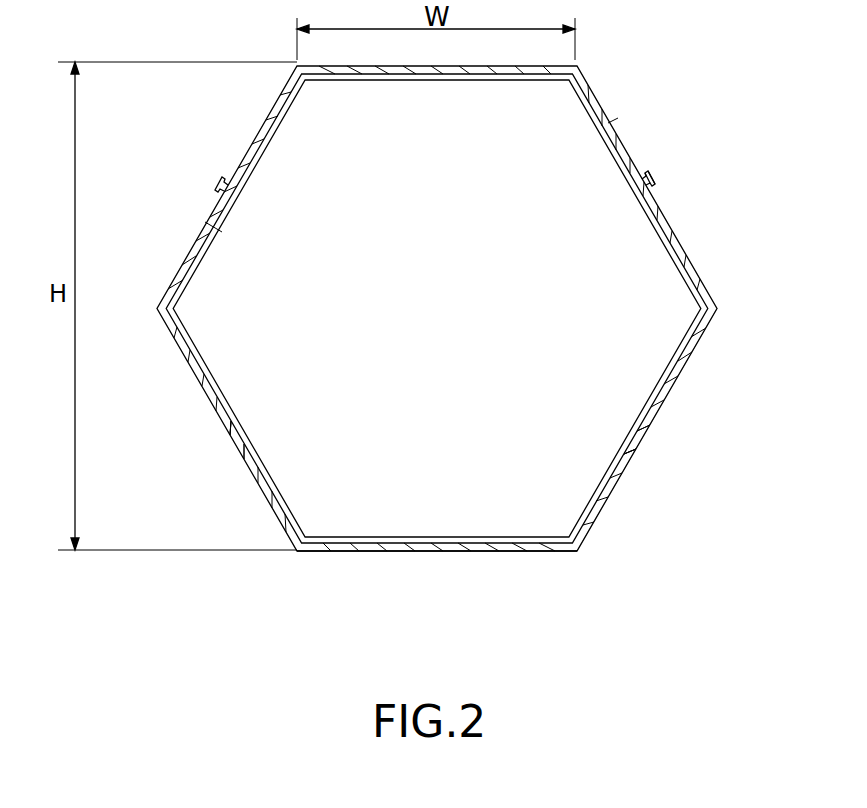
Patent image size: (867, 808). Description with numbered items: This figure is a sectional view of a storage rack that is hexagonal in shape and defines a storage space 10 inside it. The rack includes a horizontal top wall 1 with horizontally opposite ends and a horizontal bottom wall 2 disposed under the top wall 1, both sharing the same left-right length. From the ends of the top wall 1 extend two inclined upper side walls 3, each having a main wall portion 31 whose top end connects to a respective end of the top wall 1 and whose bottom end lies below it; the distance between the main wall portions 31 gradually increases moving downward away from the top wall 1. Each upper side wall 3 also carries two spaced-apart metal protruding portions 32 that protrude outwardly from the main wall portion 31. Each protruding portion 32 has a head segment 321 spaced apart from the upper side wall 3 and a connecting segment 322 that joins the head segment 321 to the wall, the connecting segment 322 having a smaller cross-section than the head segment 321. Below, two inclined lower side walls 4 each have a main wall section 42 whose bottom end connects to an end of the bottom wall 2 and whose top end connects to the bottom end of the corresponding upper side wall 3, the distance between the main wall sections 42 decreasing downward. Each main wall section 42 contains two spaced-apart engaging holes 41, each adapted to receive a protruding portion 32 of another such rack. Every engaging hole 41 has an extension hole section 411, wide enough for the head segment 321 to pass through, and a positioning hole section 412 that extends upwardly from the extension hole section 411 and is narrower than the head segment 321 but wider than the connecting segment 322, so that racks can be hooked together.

The top wall 1 is at (547, 72).
The storage space 10 is at (467, 515).
The bottom wall 2 is at (375, 551).
The upper side wall 3 is at (252, 118).
The main wall portion 31 is at (207, 223).
The protruding portion 32 is at (210, 176).
The head segment 321 is at (653, 181).
The connecting segment 322 is at (655, 187).
The lower side wall 4 is at (172, 346).
The engaging hole 41 is at (148, 418).
The extension hole section 411 is at (233, 440).
The positioning hole section 412 is at (227, 428).
The main wall section 42 is at (612, 480).